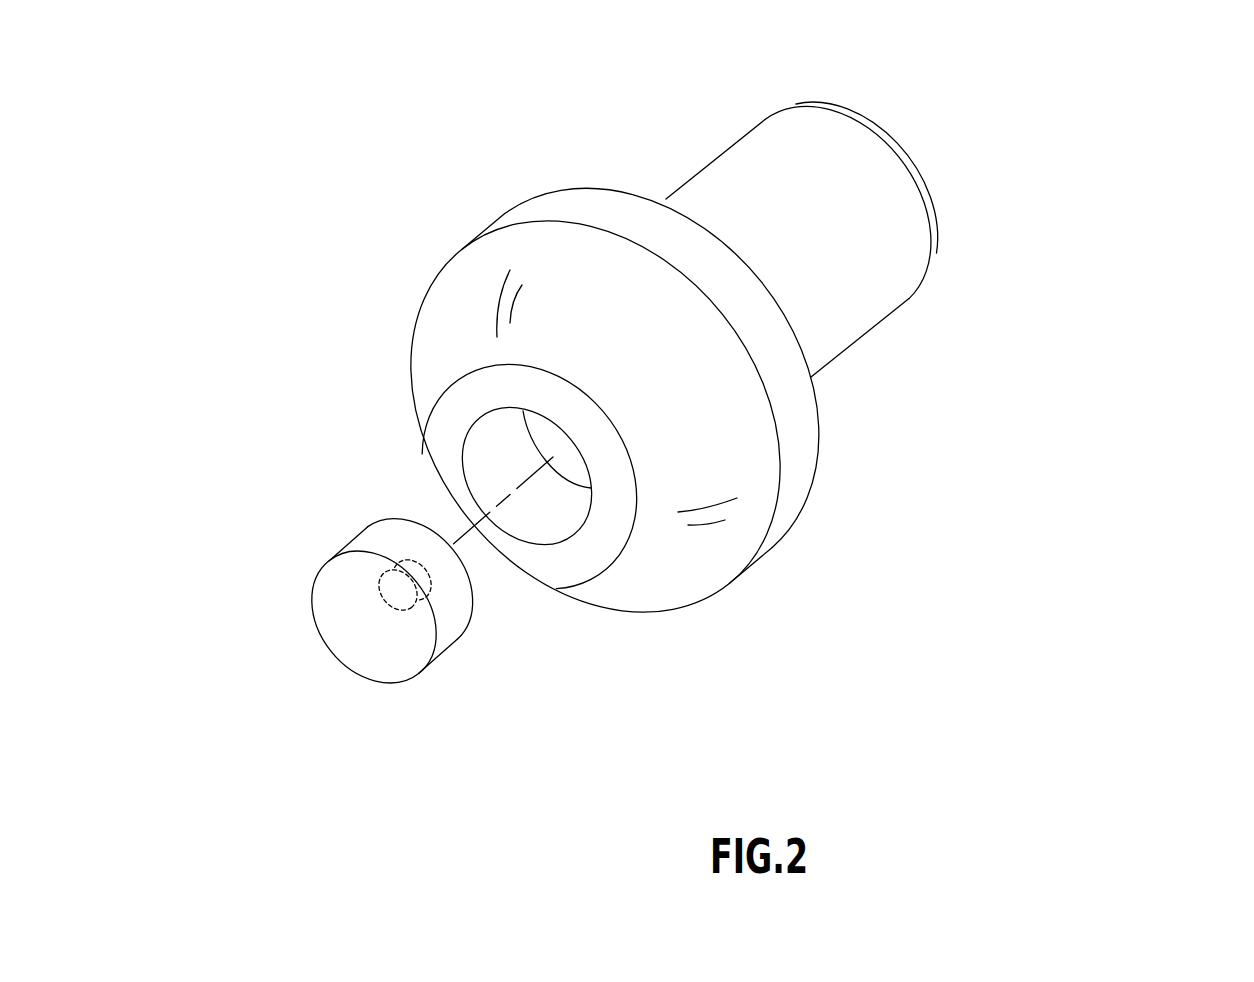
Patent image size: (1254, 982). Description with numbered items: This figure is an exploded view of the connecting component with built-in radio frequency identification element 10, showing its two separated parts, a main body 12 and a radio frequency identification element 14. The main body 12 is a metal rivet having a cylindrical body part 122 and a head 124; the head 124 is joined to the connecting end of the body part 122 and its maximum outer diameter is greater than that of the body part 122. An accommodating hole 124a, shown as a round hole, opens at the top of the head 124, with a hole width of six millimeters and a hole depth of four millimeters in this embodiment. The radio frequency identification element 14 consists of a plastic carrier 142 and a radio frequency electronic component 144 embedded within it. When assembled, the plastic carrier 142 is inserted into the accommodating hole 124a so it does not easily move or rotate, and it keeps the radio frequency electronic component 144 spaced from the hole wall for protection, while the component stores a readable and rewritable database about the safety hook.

The connecting component with built-in radio frequency identification element 10 is at (1062, 132).
The main body 12 is at (428, 275).
The body part 122 is at (855, 270).
The head 124 is at (802, 430).
The accommodating hole 124a is at (486, 449).
The radio frequency identification element 14 is at (308, 576).
The plastic carrier 142 is at (447, 635).
The radio frequency electronic component 144 is at (397, 600).